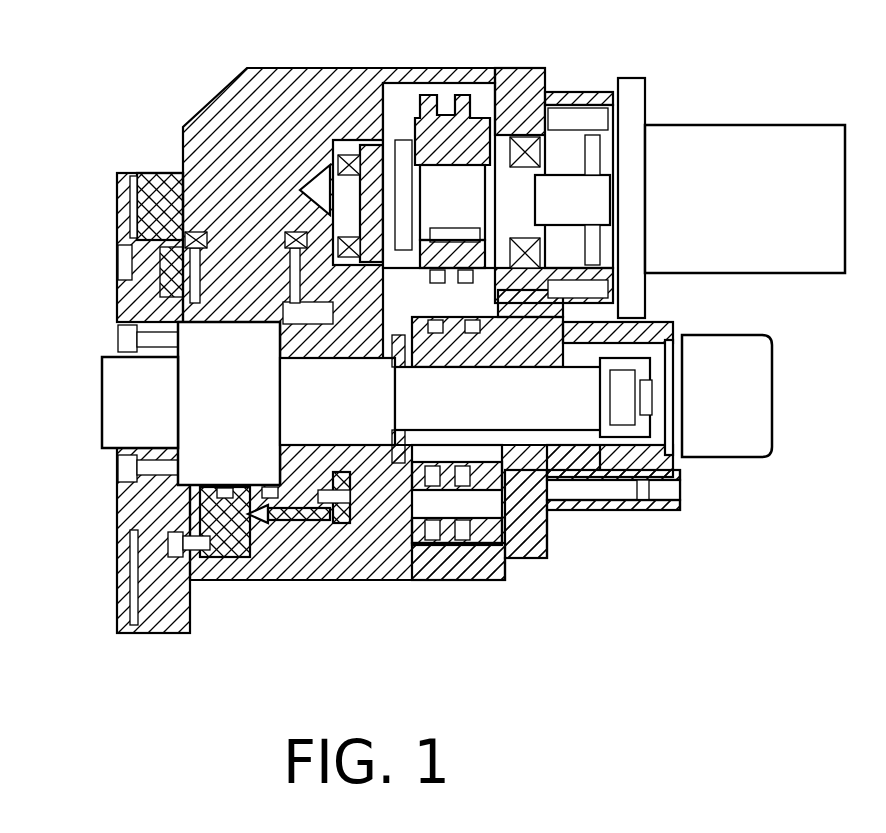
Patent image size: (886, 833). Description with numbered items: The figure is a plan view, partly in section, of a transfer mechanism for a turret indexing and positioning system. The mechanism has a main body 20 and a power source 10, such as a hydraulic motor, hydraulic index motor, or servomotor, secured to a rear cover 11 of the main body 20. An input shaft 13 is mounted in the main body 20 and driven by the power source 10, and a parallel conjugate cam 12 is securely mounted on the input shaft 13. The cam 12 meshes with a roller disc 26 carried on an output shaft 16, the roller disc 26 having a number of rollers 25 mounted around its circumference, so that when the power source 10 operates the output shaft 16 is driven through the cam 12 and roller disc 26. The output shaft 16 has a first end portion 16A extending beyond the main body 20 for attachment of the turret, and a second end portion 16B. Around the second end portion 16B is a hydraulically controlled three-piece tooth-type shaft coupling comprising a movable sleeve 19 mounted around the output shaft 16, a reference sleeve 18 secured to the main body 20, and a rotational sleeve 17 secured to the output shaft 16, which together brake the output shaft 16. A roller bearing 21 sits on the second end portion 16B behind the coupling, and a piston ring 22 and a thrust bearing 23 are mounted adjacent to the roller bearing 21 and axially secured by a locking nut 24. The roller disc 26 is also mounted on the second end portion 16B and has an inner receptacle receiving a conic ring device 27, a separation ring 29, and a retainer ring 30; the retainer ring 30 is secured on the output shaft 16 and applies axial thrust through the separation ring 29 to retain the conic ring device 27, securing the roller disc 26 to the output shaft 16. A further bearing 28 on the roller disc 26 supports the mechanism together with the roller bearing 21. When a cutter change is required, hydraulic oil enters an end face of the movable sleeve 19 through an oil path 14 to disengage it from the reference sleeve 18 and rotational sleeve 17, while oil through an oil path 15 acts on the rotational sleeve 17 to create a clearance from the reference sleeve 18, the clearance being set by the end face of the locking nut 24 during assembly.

The power source 10 is at (673, 155).
The rear cover 11 is at (537, 73).
The parallel conjugate cam 12 is at (463, 133).
The input shaft 13 is at (400, 197).
The oil path 14 is at (293, 237).
The oil path 15 is at (197, 235).
The output shaft 16 is at (182, 378).
The first end portion 16A is at (102, 425).
The second end portion 16B is at (533, 560).
The rotational sleeve 17 is at (137, 502).
The reference sleeve 18 is at (125, 533).
The movable sleeve 19 is at (225, 540).
The main body 20 is at (267, 550).
The roller bearing 21 is at (297, 527).
The piston ring 22 is at (338, 527).
The thrust bearing 23 is at (380, 465).
The locking nut 24 is at (435, 495).
The rollers 25 is at (447, 545).
The roller disc 26 is at (498, 570).
The conic ring device 27 is at (550, 500).
The bearing 28 is at (543, 480).
The separation ring 29 is at (607, 497).
The retainer ring 30 is at (643, 318).